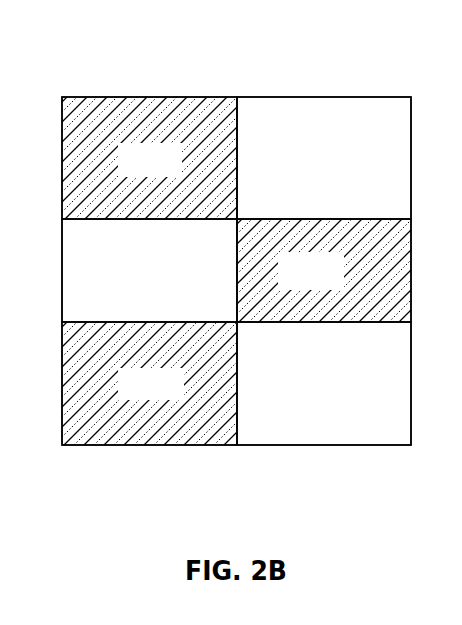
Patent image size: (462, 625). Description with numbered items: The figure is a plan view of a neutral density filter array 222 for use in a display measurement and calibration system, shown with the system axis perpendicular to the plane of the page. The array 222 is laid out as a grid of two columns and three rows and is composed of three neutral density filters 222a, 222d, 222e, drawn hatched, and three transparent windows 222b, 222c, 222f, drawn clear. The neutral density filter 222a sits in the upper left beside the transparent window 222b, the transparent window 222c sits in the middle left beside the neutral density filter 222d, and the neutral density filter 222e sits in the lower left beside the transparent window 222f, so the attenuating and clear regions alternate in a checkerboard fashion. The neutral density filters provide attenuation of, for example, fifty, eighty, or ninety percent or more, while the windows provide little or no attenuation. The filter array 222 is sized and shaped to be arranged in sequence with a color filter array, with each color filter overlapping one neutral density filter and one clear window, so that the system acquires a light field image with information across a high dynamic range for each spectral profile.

The neutral density filter array 222 is at (110, 56).
The neutral density filter 222a is at (176, 171).
The transparent window 222b is at (337, 171).
The transparent window 222c is at (176, 281).
The neutral density filter 222d is at (337, 281).
The neutral density filter 222e is at (176, 395).
The transparent window 222f is at (337, 395).